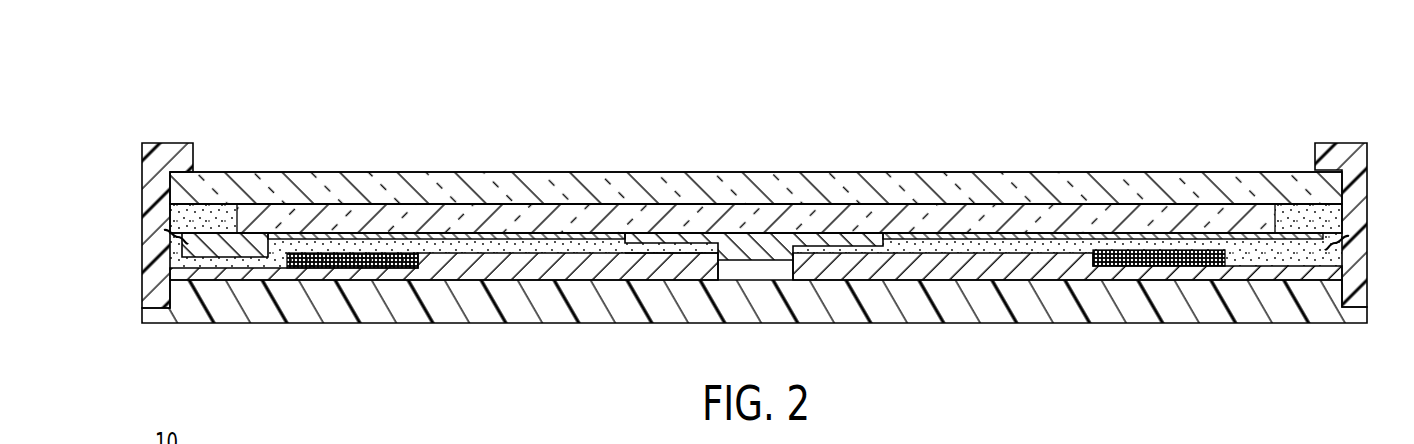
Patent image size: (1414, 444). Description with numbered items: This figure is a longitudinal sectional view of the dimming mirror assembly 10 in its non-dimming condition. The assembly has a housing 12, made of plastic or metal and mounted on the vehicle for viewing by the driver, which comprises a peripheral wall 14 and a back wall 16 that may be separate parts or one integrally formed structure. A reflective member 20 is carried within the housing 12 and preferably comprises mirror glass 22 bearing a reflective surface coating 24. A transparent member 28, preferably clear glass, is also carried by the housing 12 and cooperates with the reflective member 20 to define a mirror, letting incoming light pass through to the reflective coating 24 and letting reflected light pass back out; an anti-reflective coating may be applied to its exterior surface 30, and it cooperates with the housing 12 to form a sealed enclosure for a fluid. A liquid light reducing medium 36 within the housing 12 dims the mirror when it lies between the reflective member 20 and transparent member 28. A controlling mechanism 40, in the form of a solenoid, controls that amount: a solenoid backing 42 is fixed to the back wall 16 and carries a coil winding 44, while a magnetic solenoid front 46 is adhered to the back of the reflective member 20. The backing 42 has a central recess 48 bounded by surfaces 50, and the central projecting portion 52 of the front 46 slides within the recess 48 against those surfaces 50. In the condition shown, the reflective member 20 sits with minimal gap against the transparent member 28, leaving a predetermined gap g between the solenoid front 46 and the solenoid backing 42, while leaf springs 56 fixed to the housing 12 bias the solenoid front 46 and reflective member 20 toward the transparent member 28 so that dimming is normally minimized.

The mirror assembly 10 is at (203, 84).
The housing 12 is at (134, 197).
The peripheral wall 14 is at (160, 284).
The back wall 16 is at (440, 312).
The reflective member 20 is at (362, 208).
The mirror glass 22 is at (426, 212).
The reflective surface coating 24 is at (534, 201).
The transparent member 28 is at (285, 185).
The exterior surface 30 is at (818, 172).
The light reducing medium 36 is at (1255, 256).
The controlling mechanism 40 is at (1175, 264).
The solenoid backing 42 is at (940, 268).
The coil winding 44 is at (353, 266).
The solenoid front 46 is at (565, 237).
The central recess 48 is at (768, 262).
The surfaces 50 is at (733, 284).
The central projecting portion 52 is at (798, 247).
The leaf springs 56 is at (163, 232).
The gap g is at (668, 253).